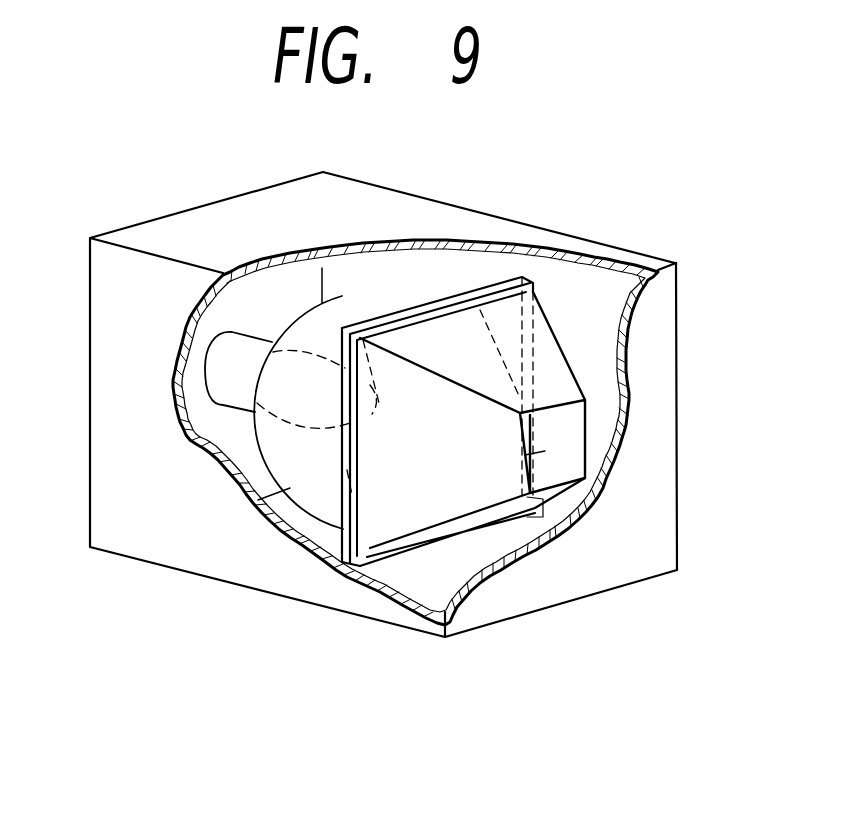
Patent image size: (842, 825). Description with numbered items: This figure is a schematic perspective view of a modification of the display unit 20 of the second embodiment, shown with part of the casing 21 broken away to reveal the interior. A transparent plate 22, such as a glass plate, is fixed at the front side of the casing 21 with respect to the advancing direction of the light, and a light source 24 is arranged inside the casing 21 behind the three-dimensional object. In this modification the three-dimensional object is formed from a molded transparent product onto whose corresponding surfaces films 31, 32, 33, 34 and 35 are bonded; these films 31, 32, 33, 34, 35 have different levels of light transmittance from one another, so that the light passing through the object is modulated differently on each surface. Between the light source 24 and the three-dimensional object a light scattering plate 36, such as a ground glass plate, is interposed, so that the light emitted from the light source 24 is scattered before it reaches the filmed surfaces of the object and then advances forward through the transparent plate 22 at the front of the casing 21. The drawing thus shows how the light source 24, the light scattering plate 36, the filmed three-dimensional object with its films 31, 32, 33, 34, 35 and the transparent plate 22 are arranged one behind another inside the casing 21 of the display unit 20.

The display unit 20 is at (642, 228).
The casing 21 is at (575, 255).
The transparent plate 22 is at (647, 550).
The light source 24 is at (378, 289).
The film 31 is at (388, 507).
The film 32 is at (543, 499).
The film 33 is at (552, 357).
The film 34 is at (585, 482).
The film 35 is at (545, 451).
The light scattering plate 36 is at (483, 290).